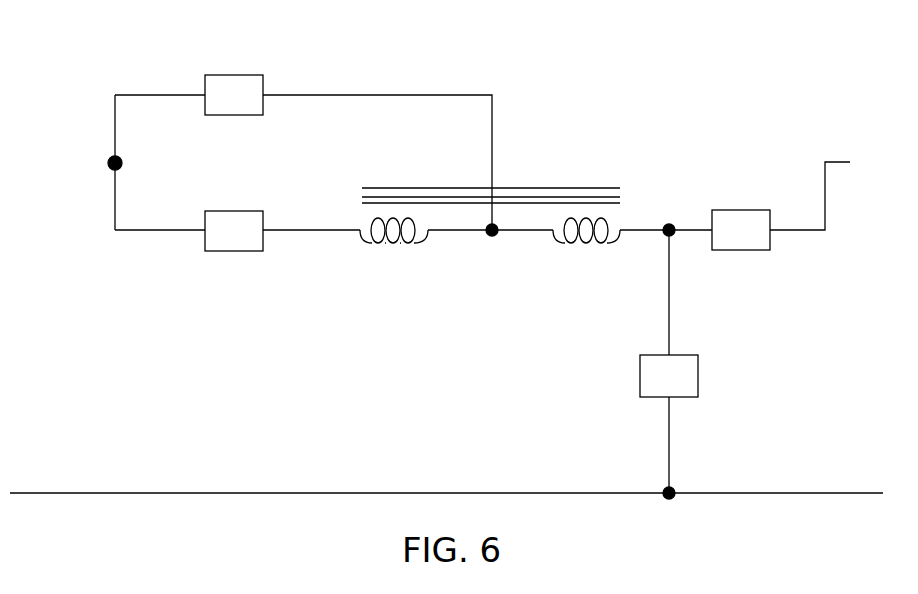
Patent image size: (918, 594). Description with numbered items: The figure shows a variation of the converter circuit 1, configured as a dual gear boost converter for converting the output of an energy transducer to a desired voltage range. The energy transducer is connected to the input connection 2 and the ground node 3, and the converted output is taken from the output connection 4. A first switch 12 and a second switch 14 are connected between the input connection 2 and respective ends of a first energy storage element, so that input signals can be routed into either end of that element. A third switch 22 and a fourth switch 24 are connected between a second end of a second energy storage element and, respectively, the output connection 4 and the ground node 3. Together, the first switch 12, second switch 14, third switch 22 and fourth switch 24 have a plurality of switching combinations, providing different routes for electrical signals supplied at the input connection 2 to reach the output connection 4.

The circuit 1 is at (80, 63).
The input connection 2 is at (108, 163).
The ground node 3 is at (446, 476).
The output connection 4 is at (817, 192).
The first switch 12 is at (234, 95).
The second switch 14 is at (234, 231).
The third switch 22 is at (741, 230).
The fourth switch 24 is at (669, 376).